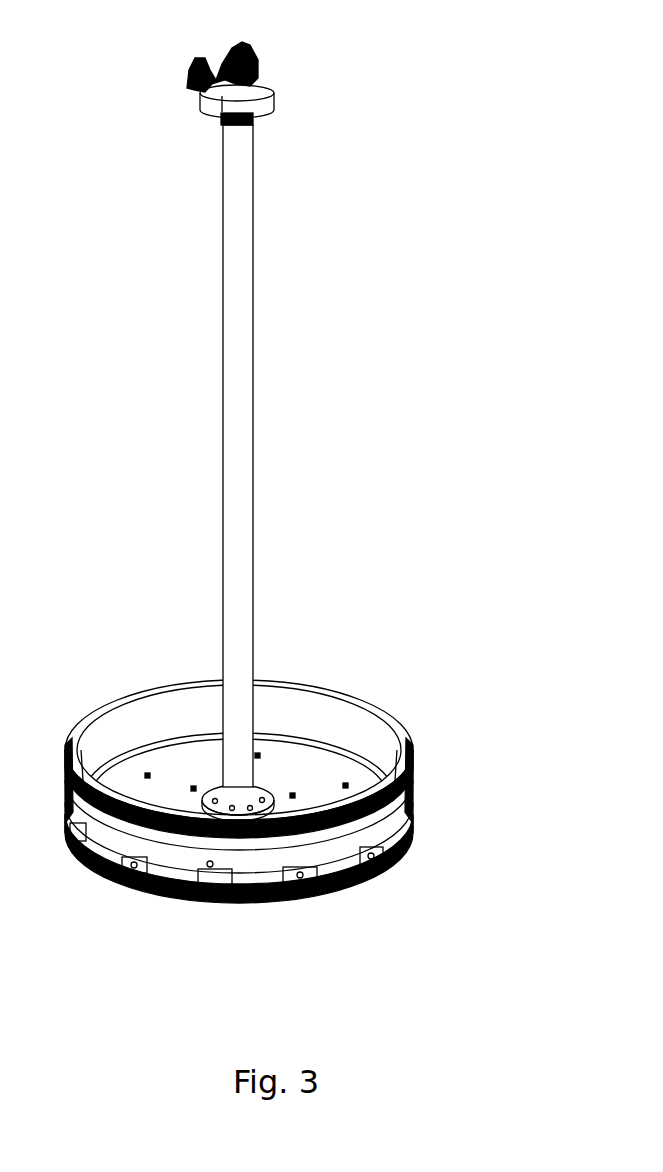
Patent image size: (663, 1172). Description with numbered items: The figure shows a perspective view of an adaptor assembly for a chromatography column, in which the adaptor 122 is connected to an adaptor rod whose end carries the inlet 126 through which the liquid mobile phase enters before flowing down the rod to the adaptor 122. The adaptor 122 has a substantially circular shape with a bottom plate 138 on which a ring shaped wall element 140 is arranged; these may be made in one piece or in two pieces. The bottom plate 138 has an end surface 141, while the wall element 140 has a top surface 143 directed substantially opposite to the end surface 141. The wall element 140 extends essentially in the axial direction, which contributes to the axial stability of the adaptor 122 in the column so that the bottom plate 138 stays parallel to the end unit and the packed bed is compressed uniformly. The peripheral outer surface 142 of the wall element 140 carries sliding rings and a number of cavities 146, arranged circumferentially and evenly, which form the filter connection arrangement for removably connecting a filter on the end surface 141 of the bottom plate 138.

The adaptor 122 is at (375, 710).
The inlet 126 is at (190, 65).
The bottom plate 138 is at (298, 767).
The ring shaped wall element 140 is at (408, 803).
The end surface 141 is at (182, 897).
The peripheral outer surface 142 is at (393, 817).
The top surface 143 is at (160, 688).
The cavities 146 is at (362, 882).